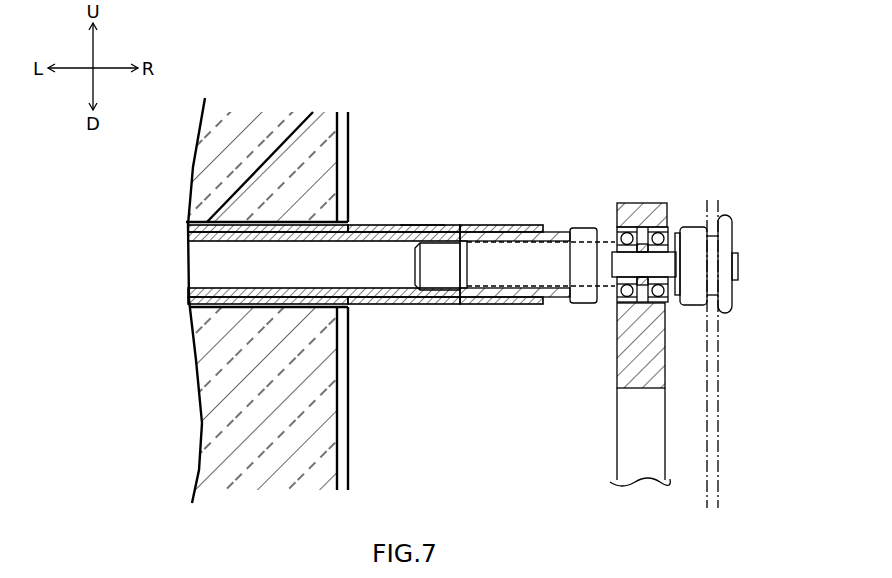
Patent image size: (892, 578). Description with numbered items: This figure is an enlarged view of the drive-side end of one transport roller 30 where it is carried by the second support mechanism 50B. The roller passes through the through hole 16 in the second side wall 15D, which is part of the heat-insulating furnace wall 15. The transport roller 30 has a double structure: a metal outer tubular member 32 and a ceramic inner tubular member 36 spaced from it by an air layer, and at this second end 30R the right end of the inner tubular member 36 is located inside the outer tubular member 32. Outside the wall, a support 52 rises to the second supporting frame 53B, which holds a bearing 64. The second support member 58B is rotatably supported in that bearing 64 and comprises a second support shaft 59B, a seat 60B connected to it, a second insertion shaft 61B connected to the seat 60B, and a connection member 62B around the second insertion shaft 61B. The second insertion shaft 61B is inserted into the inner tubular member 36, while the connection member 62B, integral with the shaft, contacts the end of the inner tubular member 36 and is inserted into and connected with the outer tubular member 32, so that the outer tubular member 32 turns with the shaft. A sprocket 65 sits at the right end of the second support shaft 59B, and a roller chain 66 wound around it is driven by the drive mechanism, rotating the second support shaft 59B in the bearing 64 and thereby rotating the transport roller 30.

The furnace wall 15 is at (350, 133).
The second side wall 15D is at (282, 128).
The through hole 16 is at (352, 225).
The inner tubular member 36 is at (220, 226).
The transport roller 30 is at (463, 223).
The second end 30R is at (522, 226).
The outer tubular member 32 is at (422, 226).
The second insertion shaft 61B is at (480, 302).
The connection member 62B is at (505, 303).
The second support member 58B is at (552, 308).
The seat 60B is at (588, 305).
The bearing 64 is at (612, 233).
The second support mechanism 50B is at (645, 344).
The support 52 is at (620, 463).
The second supporting frame 53B is at (667, 370).
The second support shaft 59B is at (642, 270).
The sprocket 65 is at (723, 208).
The roller chain 66 is at (720, 466).